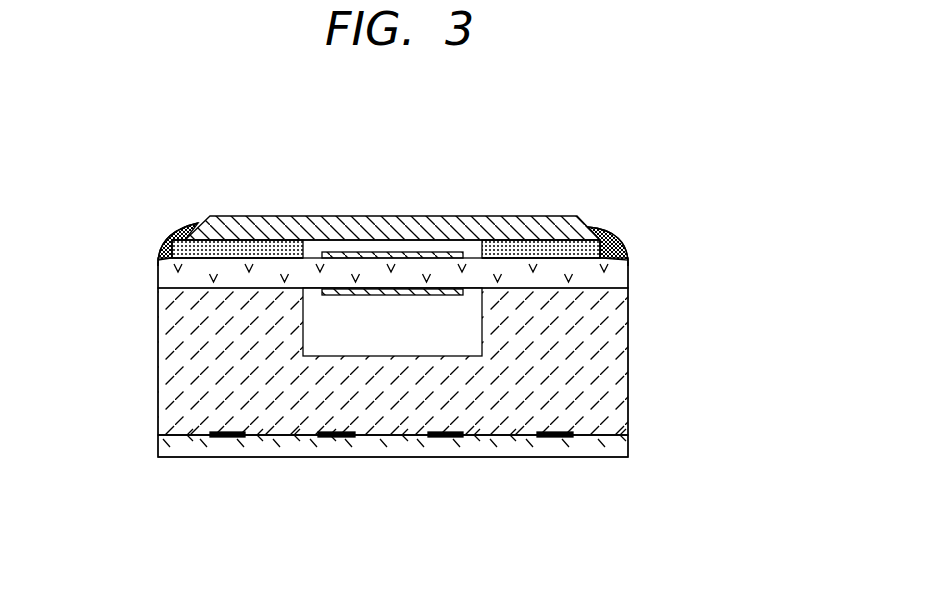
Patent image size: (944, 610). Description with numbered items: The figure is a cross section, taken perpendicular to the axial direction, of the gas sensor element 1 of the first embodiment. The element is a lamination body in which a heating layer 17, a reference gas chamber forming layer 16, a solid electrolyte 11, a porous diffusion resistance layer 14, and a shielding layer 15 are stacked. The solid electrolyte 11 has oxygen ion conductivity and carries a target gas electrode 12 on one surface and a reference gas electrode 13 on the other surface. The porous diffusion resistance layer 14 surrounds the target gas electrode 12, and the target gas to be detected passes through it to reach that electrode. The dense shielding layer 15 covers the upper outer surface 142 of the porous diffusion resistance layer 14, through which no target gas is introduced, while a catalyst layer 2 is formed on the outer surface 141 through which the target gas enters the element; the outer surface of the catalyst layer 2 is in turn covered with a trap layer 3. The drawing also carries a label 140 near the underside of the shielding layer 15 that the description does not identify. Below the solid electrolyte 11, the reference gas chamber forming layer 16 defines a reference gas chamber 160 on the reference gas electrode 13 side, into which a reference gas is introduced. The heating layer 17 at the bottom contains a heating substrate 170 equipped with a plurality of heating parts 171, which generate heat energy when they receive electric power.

The gas sensor element 1 is at (558, 197).
The catalyst layer 2 is at (170, 236).
The trap layer 3 is at (178, 232).
The solid electrolyte 11 is at (593, 279).
The target gas electrode 12 is at (384, 256).
The reference gas electrode 13 is at (378, 296).
The porous diffusion resistance layer 14 is at (284, 242).
The shielding layer 15 is at (435, 235).
The reference gas chamber forming layer 16 is at (492, 397).
The heating layer 17 is at (640, 440).
The lower surface of lid 140 is at (357, 247).
The outer surface 141 is at (625, 247).
The outer surface 142 is at (242, 240).
The reference gas chamber 160 is at (332, 337).
The heating substrate 170 is at (310, 445).
The heating parts 171 is at (228, 440).